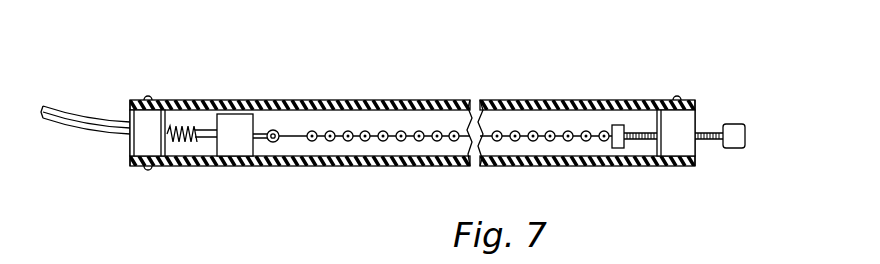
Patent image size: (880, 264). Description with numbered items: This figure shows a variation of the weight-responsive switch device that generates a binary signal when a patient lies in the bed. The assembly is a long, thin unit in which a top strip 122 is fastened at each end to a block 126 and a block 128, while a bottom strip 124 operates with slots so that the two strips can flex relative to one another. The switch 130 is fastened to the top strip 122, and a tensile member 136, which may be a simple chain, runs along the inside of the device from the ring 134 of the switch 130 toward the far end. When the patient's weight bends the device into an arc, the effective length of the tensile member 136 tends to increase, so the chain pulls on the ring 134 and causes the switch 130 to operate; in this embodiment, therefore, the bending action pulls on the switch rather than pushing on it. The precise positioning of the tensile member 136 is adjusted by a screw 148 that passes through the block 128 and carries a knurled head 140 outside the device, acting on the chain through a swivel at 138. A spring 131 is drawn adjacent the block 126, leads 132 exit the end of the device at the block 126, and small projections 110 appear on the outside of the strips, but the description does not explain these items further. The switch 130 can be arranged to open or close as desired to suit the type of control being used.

The protrusions / detent bumps 110 is at (148, 97).
The top strip 122 is at (193, 103).
The bottom strip 124 is at (245, 168).
The block 126 is at (142, 147).
The block 128 is at (680, 150).
The switch 130 is at (237, 128).
The spring 131 is at (212, 146).
The cable 132 is at (78, 122).
The ring 134 is at (279, 141).
The tensile member 136 is at (420, 141).
The swivel 138 is at (619, 148).
The knurled head 140 is at (735, 132).
The screw 148 is at (640, 130).